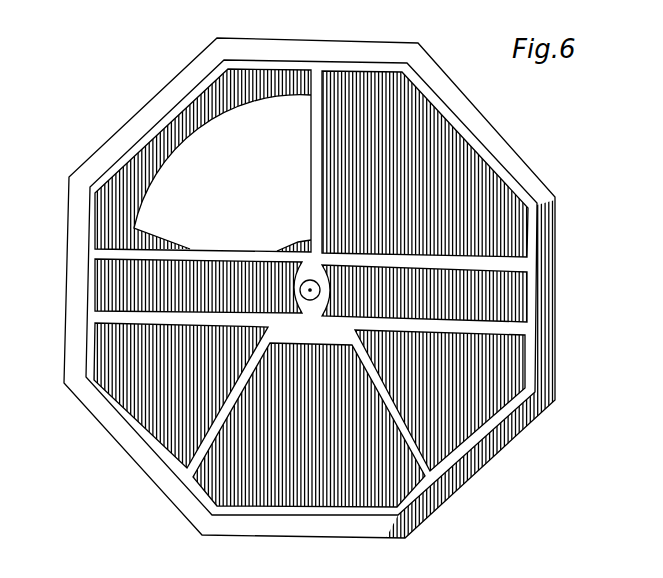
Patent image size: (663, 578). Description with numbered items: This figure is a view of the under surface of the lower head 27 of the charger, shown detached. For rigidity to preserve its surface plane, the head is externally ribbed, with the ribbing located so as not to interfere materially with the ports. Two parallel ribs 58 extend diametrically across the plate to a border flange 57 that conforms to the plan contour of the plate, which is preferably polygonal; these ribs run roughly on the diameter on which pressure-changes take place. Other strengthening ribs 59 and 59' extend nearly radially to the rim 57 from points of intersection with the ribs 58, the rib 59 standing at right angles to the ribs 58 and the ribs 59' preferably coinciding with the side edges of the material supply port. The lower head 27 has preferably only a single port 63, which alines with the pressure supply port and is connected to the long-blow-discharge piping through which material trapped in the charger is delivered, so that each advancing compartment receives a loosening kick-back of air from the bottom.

The lower head 27 is at (567, 325).
The border flange 57 is at (143, 437).
The parallel ribs 58 is at (460, 258).
The strengthening rib 59 is at (425, 136).
The strengthening ribs 59' is at (309, 445).
The port 63 is at (172, 155).